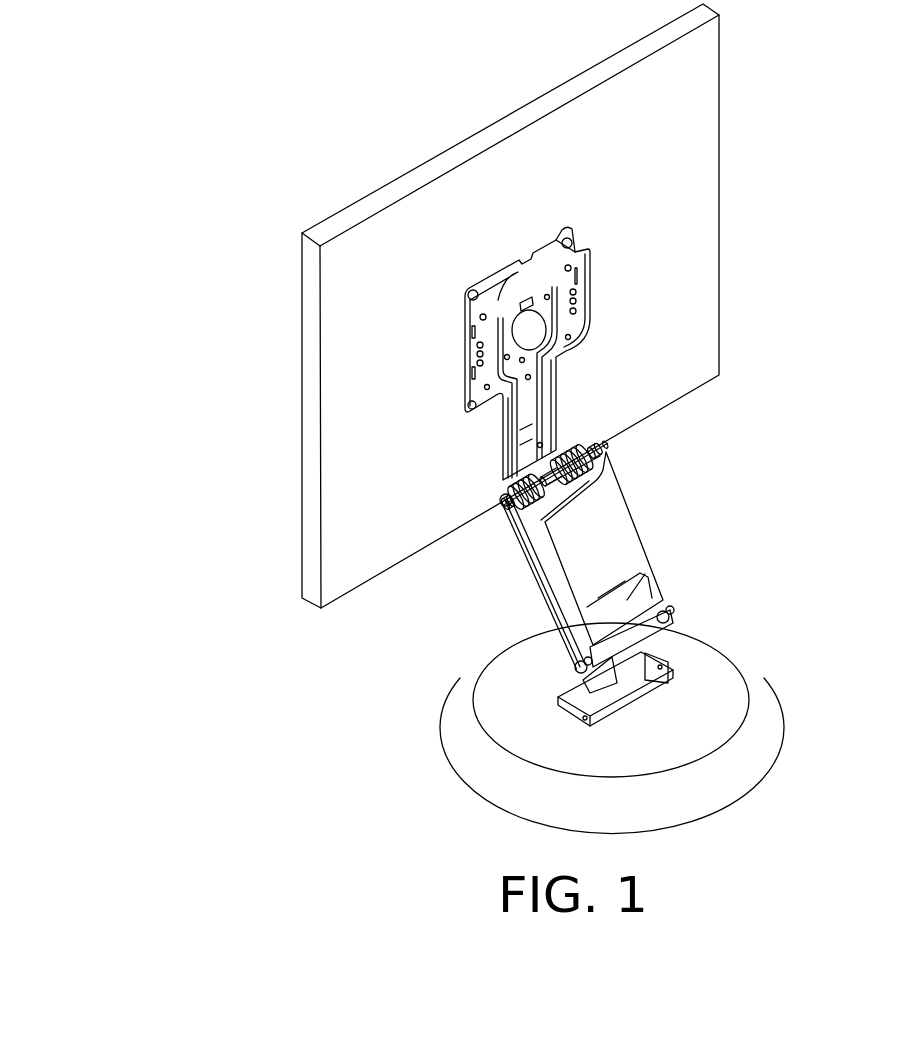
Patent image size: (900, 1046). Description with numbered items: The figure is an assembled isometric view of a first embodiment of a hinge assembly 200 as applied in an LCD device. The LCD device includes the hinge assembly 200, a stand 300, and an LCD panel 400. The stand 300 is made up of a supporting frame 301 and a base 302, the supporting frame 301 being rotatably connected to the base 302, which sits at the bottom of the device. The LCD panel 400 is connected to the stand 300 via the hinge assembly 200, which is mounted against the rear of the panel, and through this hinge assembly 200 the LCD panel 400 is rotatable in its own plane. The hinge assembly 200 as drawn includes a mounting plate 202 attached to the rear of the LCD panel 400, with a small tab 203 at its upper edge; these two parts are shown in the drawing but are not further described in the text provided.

The LCD panel 400 is at (693, 148).
The hinge assembly 200 is at (437, 332).
The mounting plate 202 is at (583, 298).
The mounting ear / tab 203 is at (568, 250).
The stand 300 is at (832, 500).
The supporting frame 301 is at (625, 533).
The base 302 is at (692, 660).